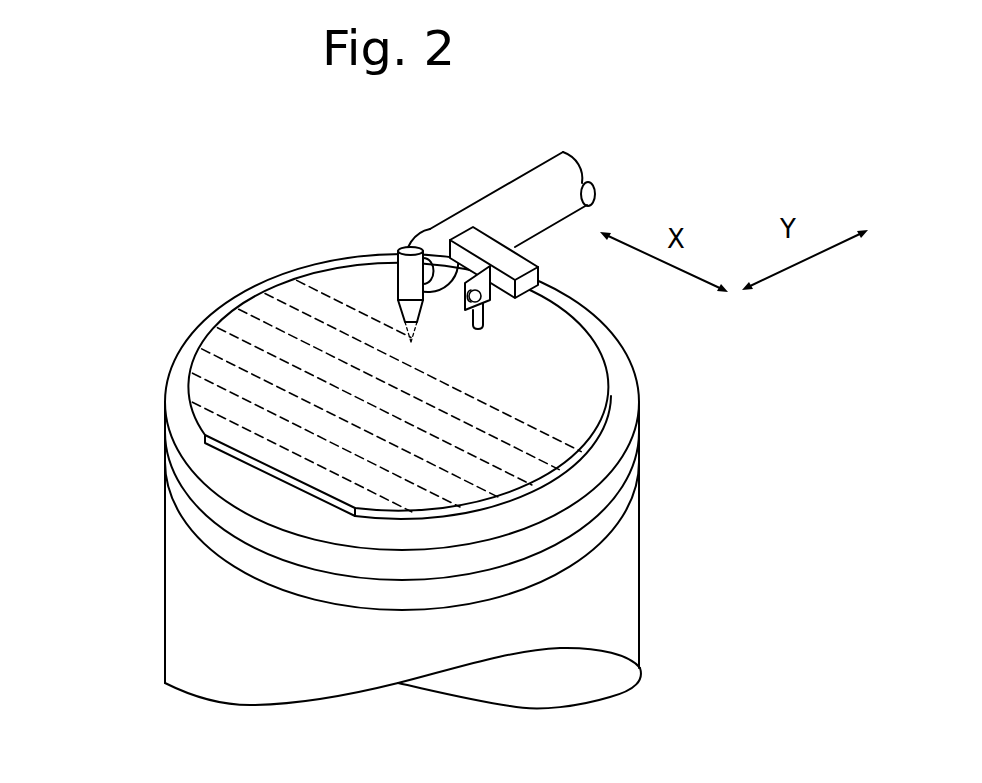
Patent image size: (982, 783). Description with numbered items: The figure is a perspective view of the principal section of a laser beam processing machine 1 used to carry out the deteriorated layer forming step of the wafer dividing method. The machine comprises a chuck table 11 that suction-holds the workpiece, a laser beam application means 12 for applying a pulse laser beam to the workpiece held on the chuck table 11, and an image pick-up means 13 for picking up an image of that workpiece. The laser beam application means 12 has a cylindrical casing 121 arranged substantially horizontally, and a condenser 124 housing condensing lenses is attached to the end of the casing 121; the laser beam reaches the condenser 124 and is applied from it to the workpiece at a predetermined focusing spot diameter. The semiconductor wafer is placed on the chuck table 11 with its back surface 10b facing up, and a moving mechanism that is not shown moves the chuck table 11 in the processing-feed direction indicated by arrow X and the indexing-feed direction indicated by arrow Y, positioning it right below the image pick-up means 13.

The laser beam processing machine 1 is at (238, 232).
The back surface 10b is at (240, 327).
The chuck table 11 is at (158, 551).
The laser beam application means 12 is at (494, 215).
The cylindrical casing 121 is at (542, 180).
The condenser 124 is at (407, 248).
The image pick-up means 13 is at (490, 341).